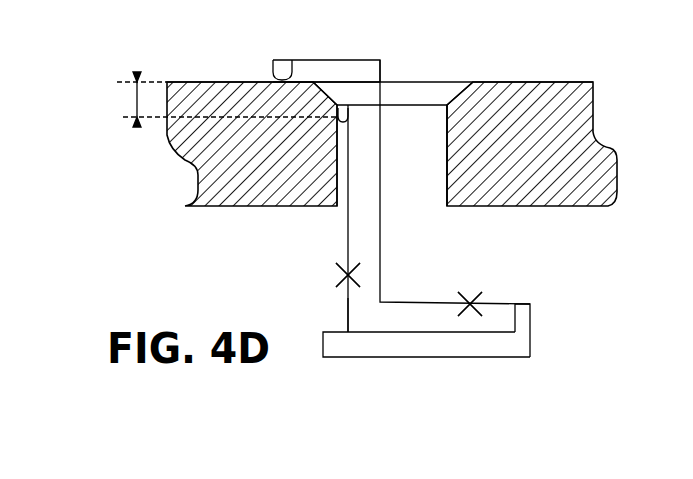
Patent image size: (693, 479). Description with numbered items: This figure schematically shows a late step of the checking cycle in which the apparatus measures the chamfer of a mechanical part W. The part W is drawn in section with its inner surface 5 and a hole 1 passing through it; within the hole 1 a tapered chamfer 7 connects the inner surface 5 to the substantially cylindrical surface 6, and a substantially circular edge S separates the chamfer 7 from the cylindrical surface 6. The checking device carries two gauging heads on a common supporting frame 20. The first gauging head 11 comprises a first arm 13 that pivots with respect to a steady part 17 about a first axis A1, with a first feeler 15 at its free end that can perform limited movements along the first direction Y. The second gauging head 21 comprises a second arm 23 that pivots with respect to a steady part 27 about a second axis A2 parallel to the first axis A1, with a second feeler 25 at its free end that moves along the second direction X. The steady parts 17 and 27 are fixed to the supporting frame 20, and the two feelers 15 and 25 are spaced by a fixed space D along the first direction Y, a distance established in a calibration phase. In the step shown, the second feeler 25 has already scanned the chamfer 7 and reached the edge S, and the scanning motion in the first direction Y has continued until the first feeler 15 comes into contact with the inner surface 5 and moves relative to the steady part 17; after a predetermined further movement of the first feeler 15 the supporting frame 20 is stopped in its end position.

The hole 1 is at (342, 150).
The inner surface 5 is at (203, 80).
The cylindrical surface 6 is at (408, 104).
The chamfer 7 is at (450, 90).
The first gauging head 11 is at (385, 58).
The first arm 13 is at (452, 304).
The first feeler 15 is at (273, 72).
The steady part 17 is at (512, 304).
The supporting frame 20 is at (507, 340).
The second gauging head 21 is at (313, 277).
The second arm 23 is at (347, 237).
The second feeler 25 is at (342, 118).
The steady part 27 is at (346, 298).
The mechanical part W is at (167, 82).
The fixed space D is at (223, 99).
The circular edge S is at (423, 153).
The first axis A1 is at (470, 303).
The second axis A2 is at (350, 277).